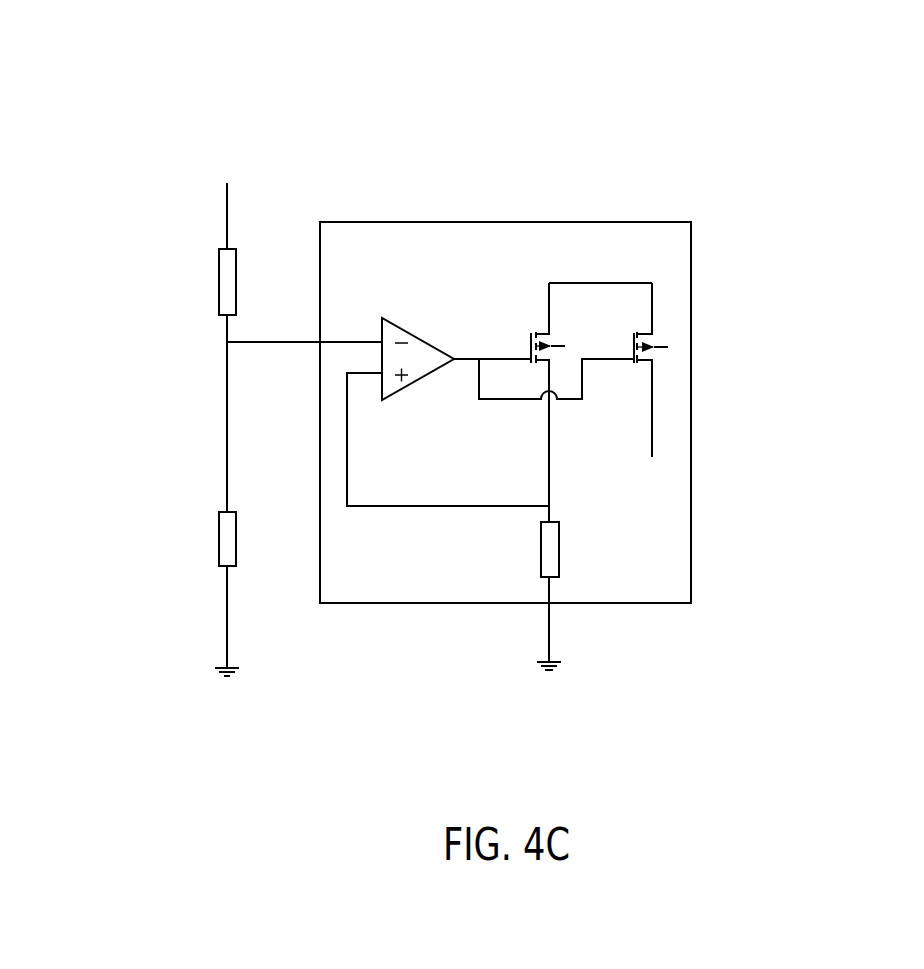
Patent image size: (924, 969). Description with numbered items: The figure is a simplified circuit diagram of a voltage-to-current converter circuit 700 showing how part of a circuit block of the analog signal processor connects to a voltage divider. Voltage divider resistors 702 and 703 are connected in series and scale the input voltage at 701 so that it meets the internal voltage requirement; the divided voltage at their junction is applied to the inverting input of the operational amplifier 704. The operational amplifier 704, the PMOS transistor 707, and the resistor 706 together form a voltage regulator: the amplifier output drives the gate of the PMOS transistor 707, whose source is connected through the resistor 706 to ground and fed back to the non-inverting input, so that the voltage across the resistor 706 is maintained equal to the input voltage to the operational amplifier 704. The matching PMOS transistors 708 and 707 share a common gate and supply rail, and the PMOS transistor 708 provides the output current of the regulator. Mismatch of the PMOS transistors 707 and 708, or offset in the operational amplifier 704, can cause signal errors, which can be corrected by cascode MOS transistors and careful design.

The current generation circuit 700 is at (819, 51).
The input voltage 701 is at (224, 222).
The voltage divider resistor 702 is at (214, 294).
The voltage divider resistor 703 is at (214, 550).
The operational amplifier 704 is at (455, 341).
The resistor 706 is at (566, 546).
The PMOS transistor 707 is at (515, 332).
The PMOS transistor 708 is at (651, 318).